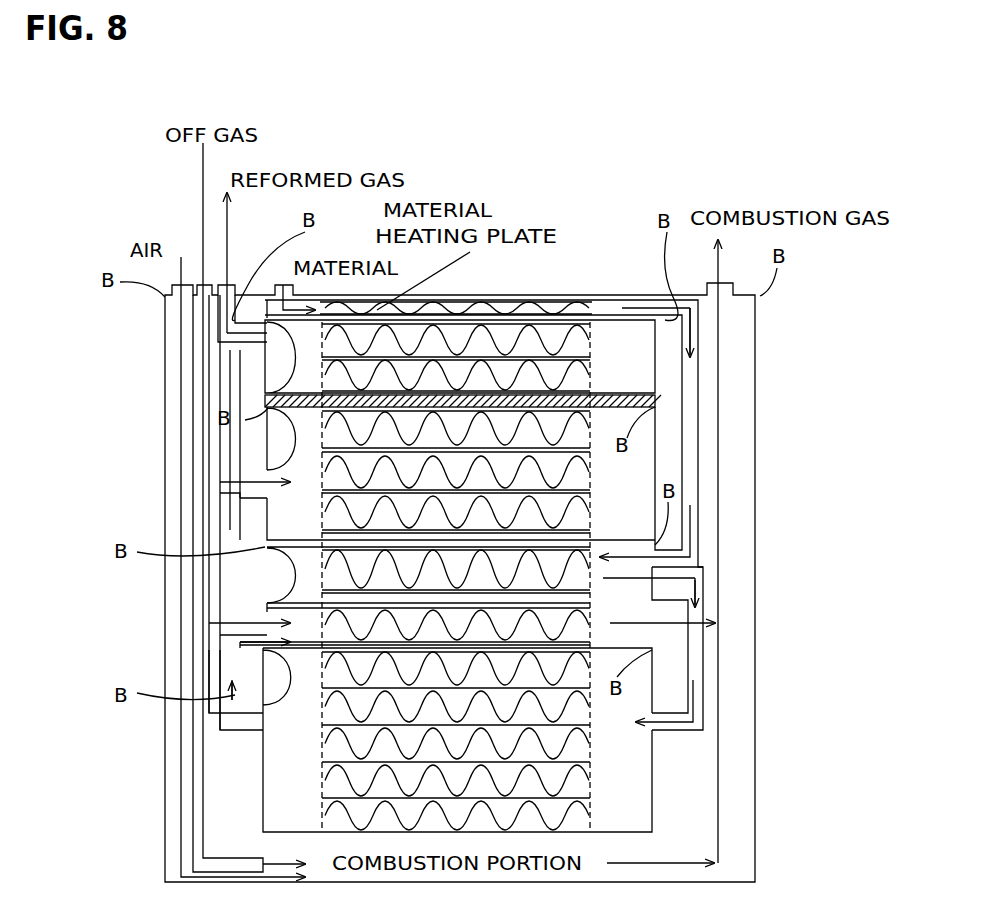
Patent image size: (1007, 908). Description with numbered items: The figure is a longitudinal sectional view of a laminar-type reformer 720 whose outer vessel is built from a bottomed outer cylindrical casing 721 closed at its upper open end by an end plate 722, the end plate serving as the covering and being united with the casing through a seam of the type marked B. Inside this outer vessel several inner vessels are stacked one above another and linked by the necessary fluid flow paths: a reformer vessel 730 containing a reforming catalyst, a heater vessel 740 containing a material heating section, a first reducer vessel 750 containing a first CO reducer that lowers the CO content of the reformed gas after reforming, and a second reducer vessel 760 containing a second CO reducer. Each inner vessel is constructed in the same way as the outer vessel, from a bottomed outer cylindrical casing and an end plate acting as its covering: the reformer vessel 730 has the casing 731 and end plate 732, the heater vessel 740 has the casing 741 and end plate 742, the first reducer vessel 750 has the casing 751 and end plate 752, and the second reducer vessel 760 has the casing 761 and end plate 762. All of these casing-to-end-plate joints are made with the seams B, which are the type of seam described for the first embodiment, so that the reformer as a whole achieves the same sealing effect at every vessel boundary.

The reformer 720 is at (660, 185).
The outer cylindrical casing 721 is at (757, 420).
The end plate 722 is at (555, 297).
The second reducer vessel 760 is at (258, 358).
The outer cylindrical casing 761 is at (270, 378).
The end plate 762 is at (270, 401).
The first reducer vessel 750 is at (260, 445).
The outer cylindrical casing 751 is at (265, 470).
The end plate 752 is at (265, 490).
The heater vessel 740 is at (258, 578).
The outer cylindrical casing 741 is at (270, 600).
The end plate 742 is at (265, 620).
The end plate 732 is at (265, 700).
The reformer vessel 730 is at (258, 780).
The outer cylindrical casing 731 is at (265, 810).